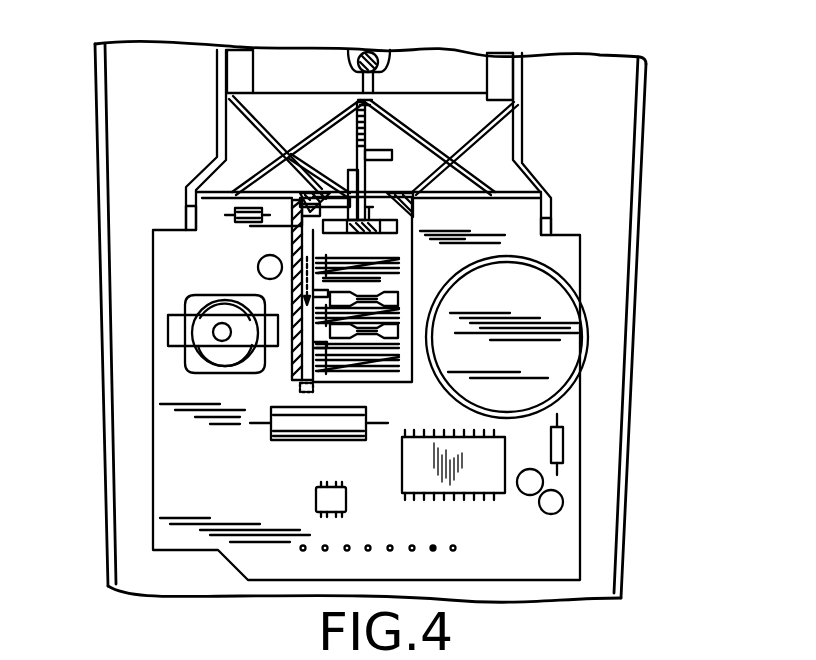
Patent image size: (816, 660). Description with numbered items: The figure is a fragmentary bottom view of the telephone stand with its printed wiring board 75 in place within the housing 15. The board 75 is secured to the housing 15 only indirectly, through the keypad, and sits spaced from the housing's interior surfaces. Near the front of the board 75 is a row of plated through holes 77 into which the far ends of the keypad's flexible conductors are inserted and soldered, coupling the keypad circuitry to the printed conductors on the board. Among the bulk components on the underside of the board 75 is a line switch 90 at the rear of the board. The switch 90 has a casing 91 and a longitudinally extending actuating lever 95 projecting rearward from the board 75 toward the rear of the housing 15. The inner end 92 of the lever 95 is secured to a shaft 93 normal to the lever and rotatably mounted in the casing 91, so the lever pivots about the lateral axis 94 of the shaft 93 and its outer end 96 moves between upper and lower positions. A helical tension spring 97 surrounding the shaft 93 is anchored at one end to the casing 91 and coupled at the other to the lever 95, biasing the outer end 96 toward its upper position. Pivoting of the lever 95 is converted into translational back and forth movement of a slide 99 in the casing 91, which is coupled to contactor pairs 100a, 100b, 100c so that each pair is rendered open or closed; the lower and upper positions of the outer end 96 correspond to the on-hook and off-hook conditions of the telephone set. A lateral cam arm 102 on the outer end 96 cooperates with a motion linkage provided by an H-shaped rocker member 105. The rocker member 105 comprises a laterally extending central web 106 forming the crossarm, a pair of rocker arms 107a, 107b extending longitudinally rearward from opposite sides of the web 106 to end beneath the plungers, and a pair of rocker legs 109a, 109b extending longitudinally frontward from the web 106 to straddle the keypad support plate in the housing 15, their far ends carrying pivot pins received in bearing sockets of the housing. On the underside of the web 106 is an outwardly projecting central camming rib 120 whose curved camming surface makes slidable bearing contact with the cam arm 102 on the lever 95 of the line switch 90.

The housing 15 is at (598, 66).
The printed wiring board 75 is at (582, 255).
The plated through holes 77 is at (433, 550).
The line switch 90 is at (387, 390).
The casing 91 is at (293, 375).
The inner end 92 is at (296, 278).
The shaft 93 is at (302, 206).
The lateral axis 94 is at (273, 226).
The actuating lever 95 is at (376, 188).
The outer end 96 is at (357, 155).
The helical tension spring 97 is at (325, 268).
The slide 99 is at (336, 182).
The contactor pair 100a is at (413, 258).
The contactor pair 100b is at (398, 318).
The contactor pair 100c is at (398, 363).
The lateral cam arm 102 is at (403, 147).
The rocker member 105 is at (530, 147).
The central web 106 is at (447, 82).
The rocker arm 107a is at (502, 67).
The rocker arm 107b is at (235, 55).
The rocker leg 109a is at (553, 224).
The rocker leg 109b is at (186, 214).
The central camming rib 120 is at (362, 128).